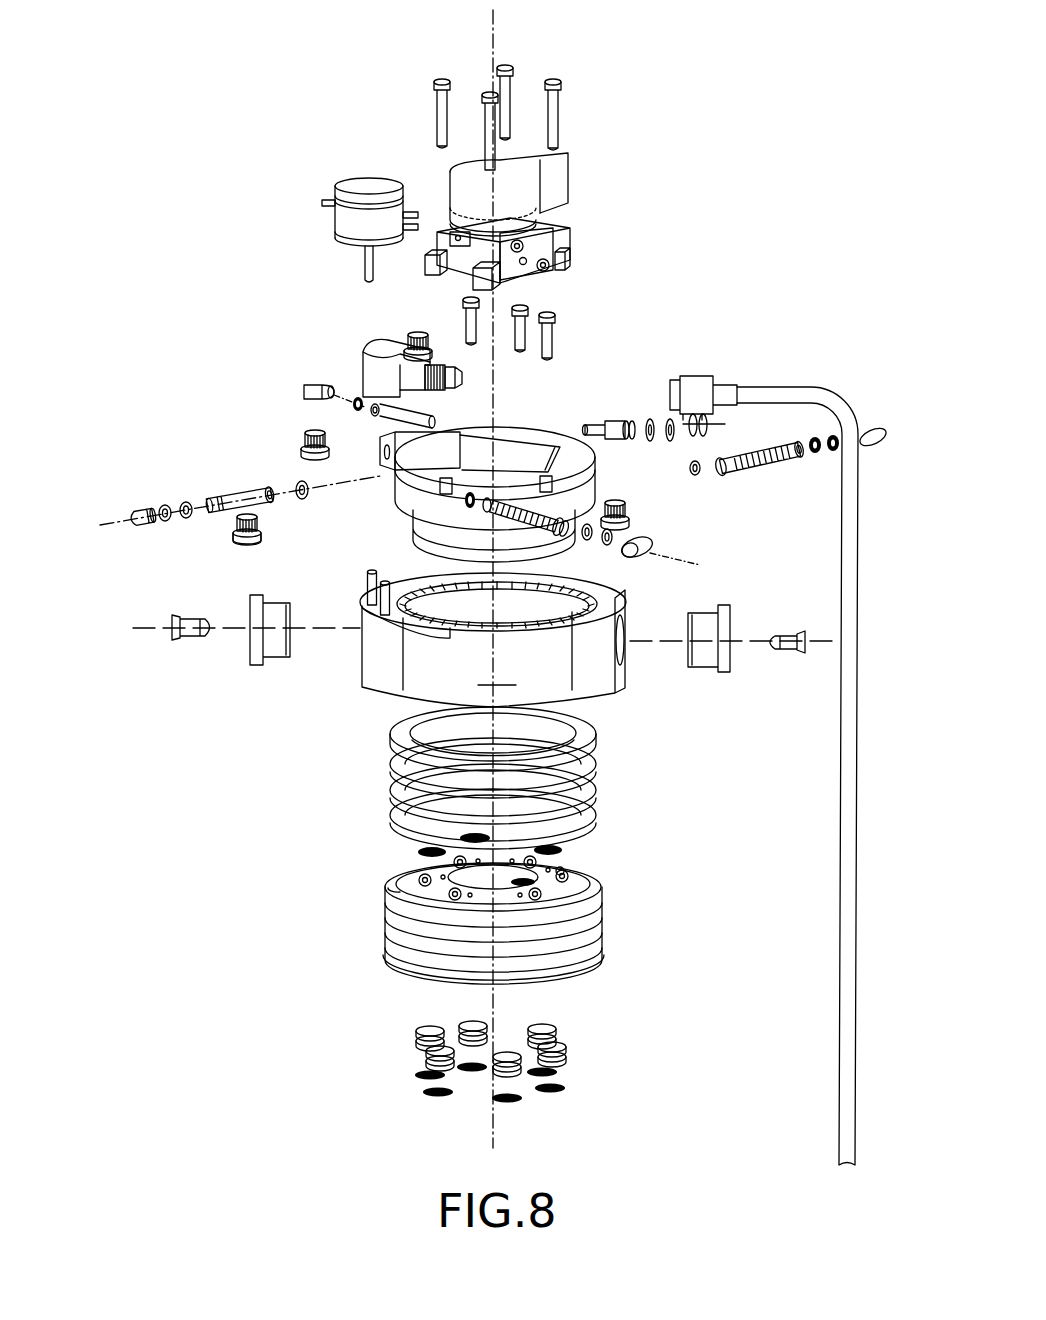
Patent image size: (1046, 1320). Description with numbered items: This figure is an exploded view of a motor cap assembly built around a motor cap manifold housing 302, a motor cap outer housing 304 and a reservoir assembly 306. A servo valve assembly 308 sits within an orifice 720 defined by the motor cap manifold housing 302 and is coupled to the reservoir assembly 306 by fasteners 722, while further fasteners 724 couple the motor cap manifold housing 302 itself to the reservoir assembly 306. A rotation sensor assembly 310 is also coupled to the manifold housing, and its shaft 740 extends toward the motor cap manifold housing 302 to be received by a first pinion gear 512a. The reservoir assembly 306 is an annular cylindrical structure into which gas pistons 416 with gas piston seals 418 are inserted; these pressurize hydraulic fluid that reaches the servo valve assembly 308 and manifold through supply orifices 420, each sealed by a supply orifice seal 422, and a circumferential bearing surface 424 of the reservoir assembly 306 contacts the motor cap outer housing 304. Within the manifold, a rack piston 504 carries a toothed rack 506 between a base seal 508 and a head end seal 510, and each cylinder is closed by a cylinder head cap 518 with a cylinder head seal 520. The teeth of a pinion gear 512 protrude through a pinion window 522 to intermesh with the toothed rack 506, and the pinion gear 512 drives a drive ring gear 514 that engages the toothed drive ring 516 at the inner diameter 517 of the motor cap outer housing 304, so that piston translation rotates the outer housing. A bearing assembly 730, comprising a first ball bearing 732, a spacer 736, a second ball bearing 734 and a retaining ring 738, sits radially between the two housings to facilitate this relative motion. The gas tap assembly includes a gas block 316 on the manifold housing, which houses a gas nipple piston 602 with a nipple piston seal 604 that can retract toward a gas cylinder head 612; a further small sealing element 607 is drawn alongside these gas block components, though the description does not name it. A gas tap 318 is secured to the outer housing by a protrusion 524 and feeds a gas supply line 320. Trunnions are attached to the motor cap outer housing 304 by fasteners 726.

The motor cap manifold housing 302 is at (538, 445).
The motor cap outer housing 304 is at (493, 640).
The reservoir assembly 306 is at (385, 897).
The servo valve assembly 308 is at (562, 206).
The rotation sensor assembly 310 is at (370, 185).
The gas block 316 is at (388, 465).
The gas tap 318 is at (373, 366).
The gas supply line 320 is at (858, 562).
The gas pistons 416 is at (418, 1030).
The gas piston seals 418 is at (418, 1073).
The supply orifices 420 is at (412, 862).
The supply orifice seal 422 is at (562, 868).
The circumferential bearing surface 424 is at (393, 890).
The rack piston 504 is at (237, 494).
The toothed rack 506 is at (760, 470).
The base seal 508 is at (303, 499).
The head end seal 510 is at (186, 502).
The pinion gear 512 is at (237, 526).
The first pinion gear 512a is at (408, 335).
The drive ring gear 514 is at (247, 542).
The toothed drive ring 516 is at (405, 590).
The inner diameter 517 is at (523, 585).
The cylinder head cap 518 is at (304, 386).
The cylinder head seal 520 is at (353, 405).
The pinion window 522 is at (272, 660).
The protrusion 524 is at (368, 586).
The gas nipple piston 602 is at (610, 425).
The nipple piston seal 604 is at (670, 441).
The seal 607 is at (650, 419).
The gas cylinder head 612 is at (708, 425).
The orifice 720 is at (490, 450).
The fasteners 722 is at (560, 121).
The fasteners 724 is at (556, 336).
The fasteners 726 is at (193, 640).
The bearing assembly 730 is at (561, 778).
The first ball bearing 732 is at (592, 742).
The second ball bearing 734 is at (595, 798).
The spacer 736 is at (595, 772).
The retaining ring 738 is at (528, 819).
The shaft 740 is at (375, 262).